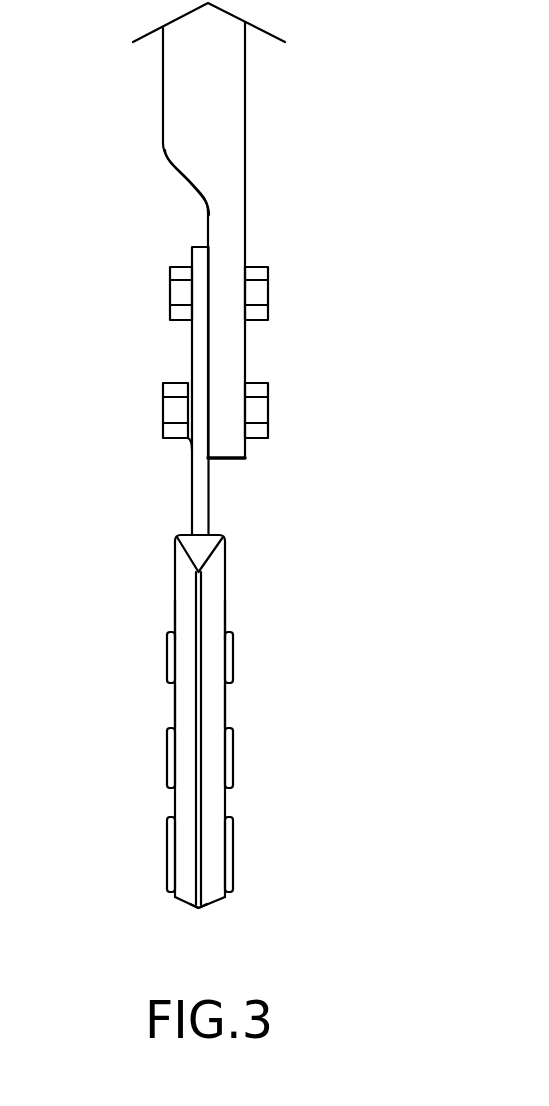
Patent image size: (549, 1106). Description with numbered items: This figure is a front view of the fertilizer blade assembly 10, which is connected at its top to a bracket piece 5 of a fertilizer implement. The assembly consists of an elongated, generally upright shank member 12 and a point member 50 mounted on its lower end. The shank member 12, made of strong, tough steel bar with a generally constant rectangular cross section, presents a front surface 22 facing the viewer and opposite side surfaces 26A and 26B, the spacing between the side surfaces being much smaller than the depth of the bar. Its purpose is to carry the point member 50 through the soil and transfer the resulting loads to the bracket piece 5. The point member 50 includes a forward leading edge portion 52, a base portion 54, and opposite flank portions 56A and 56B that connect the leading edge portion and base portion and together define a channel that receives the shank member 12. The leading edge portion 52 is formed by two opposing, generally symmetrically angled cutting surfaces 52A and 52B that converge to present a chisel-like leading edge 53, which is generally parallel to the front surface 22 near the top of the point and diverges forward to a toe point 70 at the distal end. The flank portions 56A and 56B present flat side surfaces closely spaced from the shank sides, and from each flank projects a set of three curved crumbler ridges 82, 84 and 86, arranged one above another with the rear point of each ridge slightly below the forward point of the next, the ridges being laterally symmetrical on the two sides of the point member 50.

The bracket piece 5 is at (232, 110).
The fertilizer blade assembly 10 is at (323, 341).
The shank member 12 is at (230, 485).
The front surface 22 is at (198, 502).
The side surface 26A is at (209, 518).
The side surface 26B is at (192, 458).
The point member 50 is at (249, 690).
The leading edge portion 52 is at (217, 585).
The cutting surface 52A is at (220, 625).
The cutting surface 52B is at (185, 596).
The leading edge 53 is at (203, 807).
The base portion 54 is at (205, 887).
The flank portion 56A is at (225, 713).
The flank portion 56B is at (175, 707).
The toe point 70 is at (198, 908).
The crumbler ridge 82 is at (167, 833).
The crumbler ridge 84 is at (167, 752).
The crumbler ridge 86 is at (167, 665).